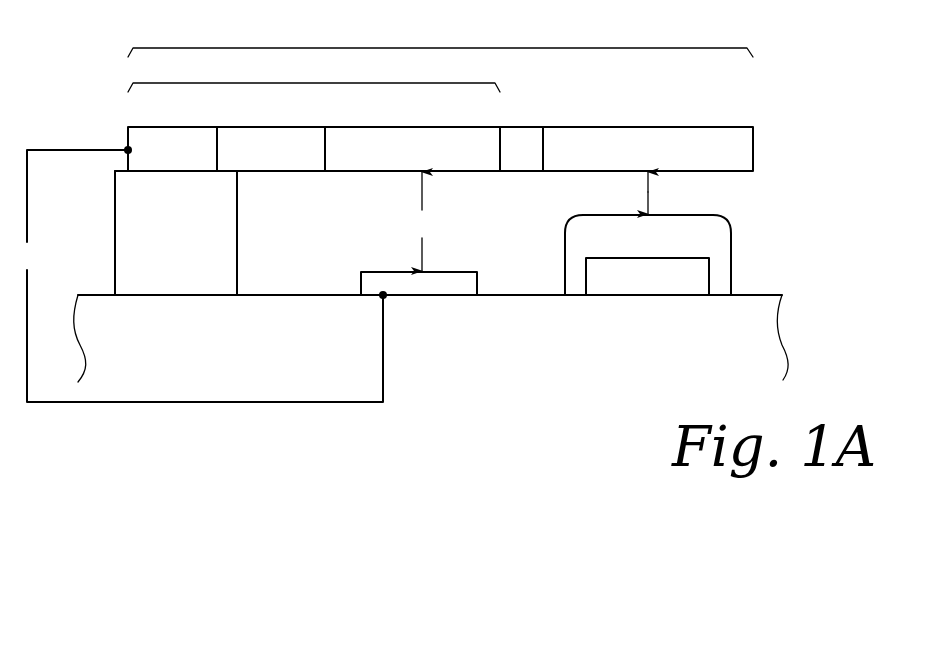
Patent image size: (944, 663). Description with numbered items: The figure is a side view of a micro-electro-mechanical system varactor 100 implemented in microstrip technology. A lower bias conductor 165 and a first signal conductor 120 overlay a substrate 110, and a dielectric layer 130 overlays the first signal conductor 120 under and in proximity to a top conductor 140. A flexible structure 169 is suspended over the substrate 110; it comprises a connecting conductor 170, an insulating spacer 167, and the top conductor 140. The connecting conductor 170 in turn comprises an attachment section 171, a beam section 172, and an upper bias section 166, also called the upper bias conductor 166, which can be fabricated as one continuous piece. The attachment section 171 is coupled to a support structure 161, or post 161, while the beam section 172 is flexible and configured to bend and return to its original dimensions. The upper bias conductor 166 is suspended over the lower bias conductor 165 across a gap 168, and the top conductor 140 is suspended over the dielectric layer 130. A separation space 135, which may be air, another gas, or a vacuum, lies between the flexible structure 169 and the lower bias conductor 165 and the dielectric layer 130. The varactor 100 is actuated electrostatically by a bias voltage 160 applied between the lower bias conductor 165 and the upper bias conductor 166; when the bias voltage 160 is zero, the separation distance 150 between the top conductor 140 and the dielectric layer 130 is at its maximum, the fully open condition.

The micro-electro-mechanical system varactor 100 is at (878, 391).
The substrate 110 is at (762, 341).
The first signal conductor 120 is at (655, 285).
The dielectric layer 130 is at (732, 255).
The separation space 135 is at (332, 245).
The top conductor 140 is at (678, 127).
The separation distance 150 is at (650, 192).
The bias voltage 160 is at (35, 257).
The support structure 161 is at (137, 213).
The lower bias conductor 165 is at (435, 285).
The upper bias section 166 is at (418, 127).
The insulating spacer 167 is at (520, 127).
The gap 168 is at (421, 221).
The flexible structure 169 is at (440, 40).
The connecting conductor 170 is at (314, 75).
The attachment section 171 is at (170, 127).
The beam section 172 is at (268, 127).